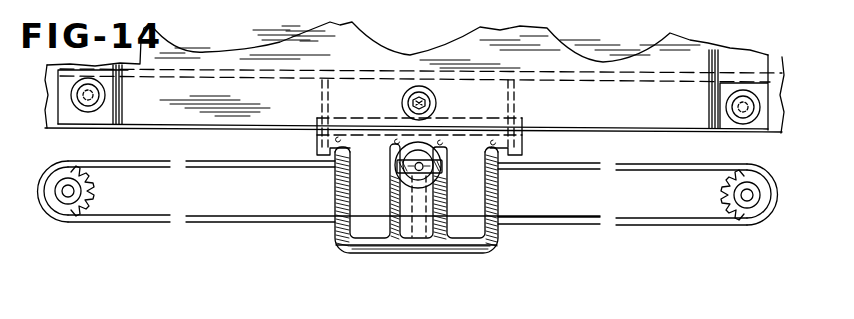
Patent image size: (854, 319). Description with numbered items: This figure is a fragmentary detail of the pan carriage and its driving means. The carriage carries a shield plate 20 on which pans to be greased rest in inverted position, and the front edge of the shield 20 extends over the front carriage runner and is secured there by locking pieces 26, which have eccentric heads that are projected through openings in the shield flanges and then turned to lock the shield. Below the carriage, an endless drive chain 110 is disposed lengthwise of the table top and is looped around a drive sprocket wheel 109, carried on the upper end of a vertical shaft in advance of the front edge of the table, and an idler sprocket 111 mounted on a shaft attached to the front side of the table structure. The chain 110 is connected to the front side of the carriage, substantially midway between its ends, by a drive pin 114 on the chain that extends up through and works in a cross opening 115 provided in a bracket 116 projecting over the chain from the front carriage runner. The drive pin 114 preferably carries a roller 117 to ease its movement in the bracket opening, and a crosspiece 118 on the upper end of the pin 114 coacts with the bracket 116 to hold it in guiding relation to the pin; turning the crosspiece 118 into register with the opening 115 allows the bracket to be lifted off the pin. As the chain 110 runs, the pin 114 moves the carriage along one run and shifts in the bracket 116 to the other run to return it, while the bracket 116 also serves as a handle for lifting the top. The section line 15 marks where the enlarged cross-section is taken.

The section line 15 is at (428, 295).
The shield plate 20 is at (352, 43).
The locking pieces 26 is at (102, 95).
The sprocket wheel 109 is at (733, 212).
The endless drive chain 110 is at (211, 217).
The idler sprocket 111 is at (66, 210).
The drive pin 114 is at (582, 132).
The cross opening 115 is at (423, 203).
The bracket 116 is at (366, 247).
The roller 117 is at (412, 184).
The crosspiece 118 is at (398, 175).